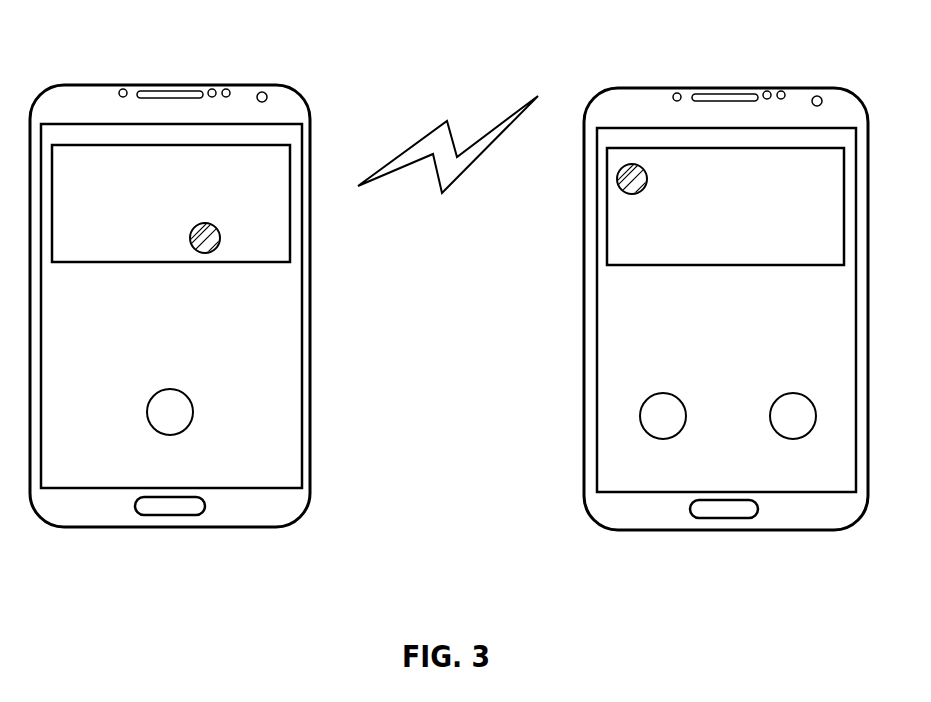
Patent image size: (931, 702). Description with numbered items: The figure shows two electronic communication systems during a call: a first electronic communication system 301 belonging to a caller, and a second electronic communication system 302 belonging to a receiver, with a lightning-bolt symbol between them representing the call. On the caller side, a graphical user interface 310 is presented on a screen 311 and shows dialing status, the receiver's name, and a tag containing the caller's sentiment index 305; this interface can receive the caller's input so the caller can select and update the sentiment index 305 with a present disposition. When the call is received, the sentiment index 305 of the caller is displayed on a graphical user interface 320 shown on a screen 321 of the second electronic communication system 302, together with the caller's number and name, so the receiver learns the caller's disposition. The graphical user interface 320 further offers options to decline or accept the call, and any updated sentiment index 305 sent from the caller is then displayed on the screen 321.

The first electronic communication system 301 is at (167, 85).
The second electronic communication system 302 is at (715, 88).
The sentiment index 305 is at (220, 235).
The graphical user interface 310 is at (302, 168).
The screen 311 is at (312, 358).
The graphical user interface 320 is at (603, 232).
The screen 321 is at (585, 357).